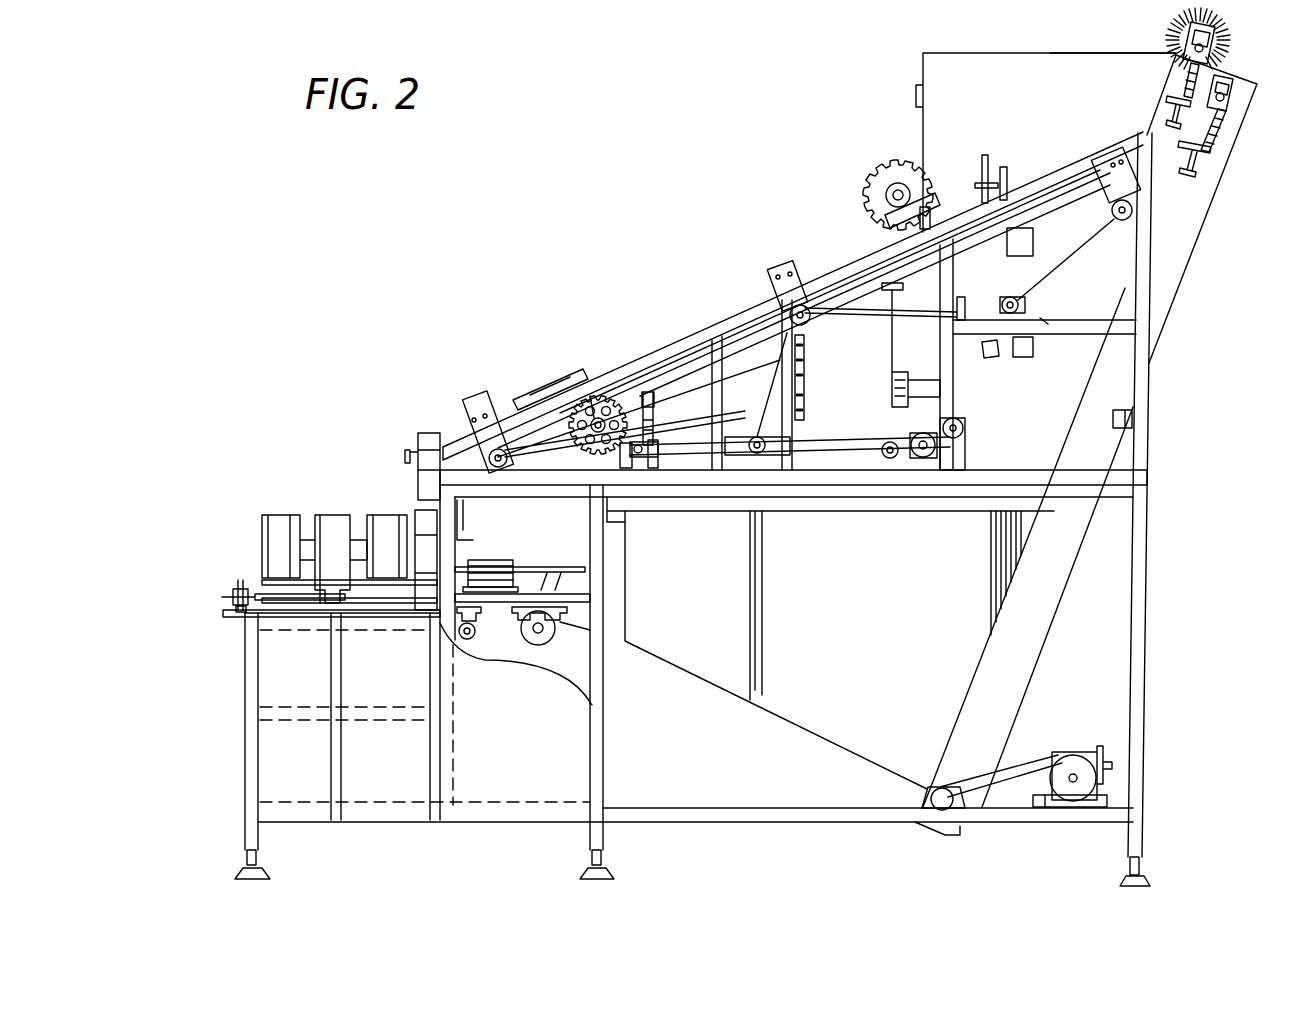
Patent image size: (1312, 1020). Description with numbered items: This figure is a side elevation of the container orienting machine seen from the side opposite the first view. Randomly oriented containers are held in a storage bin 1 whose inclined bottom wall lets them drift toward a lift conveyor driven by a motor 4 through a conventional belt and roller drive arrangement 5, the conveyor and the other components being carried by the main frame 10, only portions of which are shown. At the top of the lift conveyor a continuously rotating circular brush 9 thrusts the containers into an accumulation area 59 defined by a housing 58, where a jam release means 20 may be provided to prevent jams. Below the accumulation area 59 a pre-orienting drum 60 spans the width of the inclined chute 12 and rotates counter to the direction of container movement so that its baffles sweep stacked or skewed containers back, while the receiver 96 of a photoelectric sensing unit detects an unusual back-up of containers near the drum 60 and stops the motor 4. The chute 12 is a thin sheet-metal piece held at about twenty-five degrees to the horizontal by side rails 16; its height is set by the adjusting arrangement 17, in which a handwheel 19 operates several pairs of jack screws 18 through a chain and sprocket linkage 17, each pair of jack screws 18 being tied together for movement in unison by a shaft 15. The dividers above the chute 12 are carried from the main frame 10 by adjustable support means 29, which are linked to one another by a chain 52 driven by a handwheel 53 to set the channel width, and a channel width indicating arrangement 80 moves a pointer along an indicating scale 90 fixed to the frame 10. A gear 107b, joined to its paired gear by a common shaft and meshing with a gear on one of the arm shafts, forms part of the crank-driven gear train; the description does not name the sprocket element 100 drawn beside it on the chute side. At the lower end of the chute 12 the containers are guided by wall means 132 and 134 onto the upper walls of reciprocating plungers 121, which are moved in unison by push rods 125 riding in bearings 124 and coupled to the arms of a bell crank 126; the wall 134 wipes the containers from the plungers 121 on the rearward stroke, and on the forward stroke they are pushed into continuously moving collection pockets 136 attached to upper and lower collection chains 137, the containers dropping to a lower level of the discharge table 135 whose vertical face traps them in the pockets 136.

The storage bin 1 is at (860, 624).
The motor 4 is at (1072, 758).
The belt and roller drive arrangement 5 is at (1020, 775).
The circular brush 9 is at (1170, 36).
The main frame 10 is at (1140, 458).
The inclined chute 12 is at (1060, 215).
The shaft 15 is at (1022, 322).
The side rails 16 is at (1035, 212).
The adjusting arrangement 17 is at (1035, 305).
The jack screws 18 is at (1048, 322).
The handwheel 19 is at (905, 458).
The jam release means 20 is at (1091, 247).
The adjustable support means 29 is at (1105, 150).
The chain 52 is at (858, 315).
The handwheel 53 is at (770, 437).
The housing 58 is at (968, 55).
The accumulation area 59 is at (1095, 84).
The pre-orienting drum 60 is at (875, 160).
The channel width indicating arrangement 80 is at (822, 387).
The indicating scale 90 is at (897, 385).
The receiver 96 is at (978, 160).
The sprocket 100 is at (592, 398).
The gear 107b is at (600, 395).
The reciprocating plungers 121 is at (470, 545).
The bearings 124 is at (500, 548).
The push rods 125 is at (552, 550).
The bell crank 126 is at (565, 632).
The wall means 132 is at (430, 412).
The wall means 134 is at (428, 590).
The discharge table 135 is at (225, 615).
The collection pockets 136 is at (320, 512).
The collection chains 137 is at (372, 517).